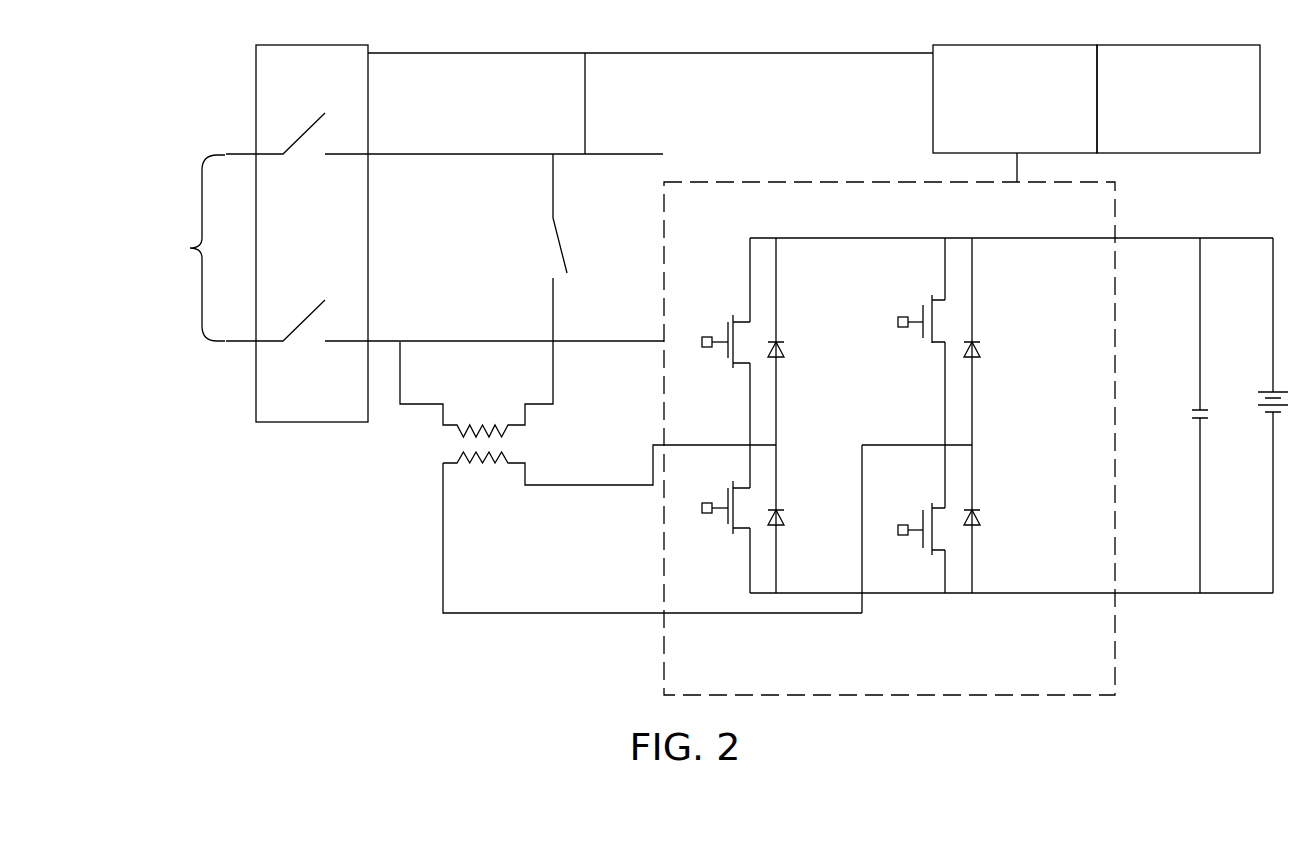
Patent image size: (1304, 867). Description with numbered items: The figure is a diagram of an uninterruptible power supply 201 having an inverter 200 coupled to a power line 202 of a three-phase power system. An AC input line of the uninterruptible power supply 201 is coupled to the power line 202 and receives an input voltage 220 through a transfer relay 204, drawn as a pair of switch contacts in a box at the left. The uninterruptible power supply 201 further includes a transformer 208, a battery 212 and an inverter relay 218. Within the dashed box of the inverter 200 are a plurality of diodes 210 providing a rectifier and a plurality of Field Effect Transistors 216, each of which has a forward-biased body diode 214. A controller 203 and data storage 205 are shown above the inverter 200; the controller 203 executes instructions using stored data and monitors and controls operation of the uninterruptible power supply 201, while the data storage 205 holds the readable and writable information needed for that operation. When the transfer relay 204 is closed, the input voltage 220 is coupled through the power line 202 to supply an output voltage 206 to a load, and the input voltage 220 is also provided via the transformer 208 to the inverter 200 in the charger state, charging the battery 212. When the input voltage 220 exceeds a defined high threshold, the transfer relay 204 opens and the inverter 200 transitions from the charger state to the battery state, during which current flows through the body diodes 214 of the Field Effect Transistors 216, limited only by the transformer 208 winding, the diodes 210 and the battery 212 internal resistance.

The inverter 200 is at (715, 665).
The uninterruptible power supply 201 is at (352, 610).
The power line 202 is at (437, 154).
The controller 203 is at (1015, 99).
The transfer relay 204 is at (315, 422).
The data storage 205 is at (1178, 99).
The output voltage 206 is at (642, 154).
The transformer 208 is at (492, 427).
The diodes 210 is at (781, 508).
The battery 212 is at (1258, 395).
The body diodes 214 is at (738, 340).
The Field Effect Transistors 216 is at (727, 323).
The inverter relay 218 is at (560, 240).
The input voltage 220 is at (187, 248).